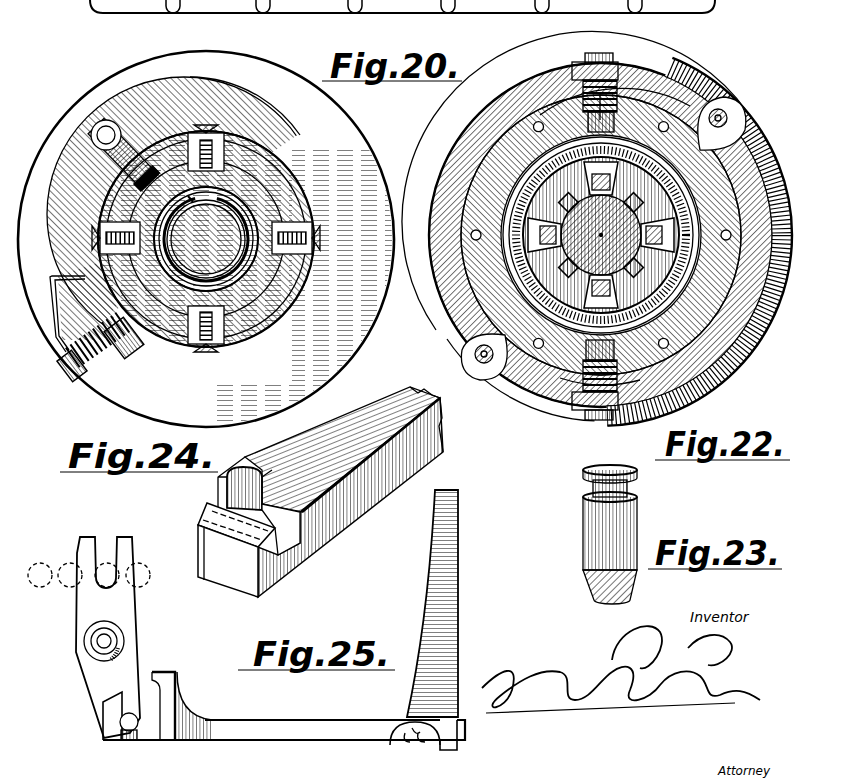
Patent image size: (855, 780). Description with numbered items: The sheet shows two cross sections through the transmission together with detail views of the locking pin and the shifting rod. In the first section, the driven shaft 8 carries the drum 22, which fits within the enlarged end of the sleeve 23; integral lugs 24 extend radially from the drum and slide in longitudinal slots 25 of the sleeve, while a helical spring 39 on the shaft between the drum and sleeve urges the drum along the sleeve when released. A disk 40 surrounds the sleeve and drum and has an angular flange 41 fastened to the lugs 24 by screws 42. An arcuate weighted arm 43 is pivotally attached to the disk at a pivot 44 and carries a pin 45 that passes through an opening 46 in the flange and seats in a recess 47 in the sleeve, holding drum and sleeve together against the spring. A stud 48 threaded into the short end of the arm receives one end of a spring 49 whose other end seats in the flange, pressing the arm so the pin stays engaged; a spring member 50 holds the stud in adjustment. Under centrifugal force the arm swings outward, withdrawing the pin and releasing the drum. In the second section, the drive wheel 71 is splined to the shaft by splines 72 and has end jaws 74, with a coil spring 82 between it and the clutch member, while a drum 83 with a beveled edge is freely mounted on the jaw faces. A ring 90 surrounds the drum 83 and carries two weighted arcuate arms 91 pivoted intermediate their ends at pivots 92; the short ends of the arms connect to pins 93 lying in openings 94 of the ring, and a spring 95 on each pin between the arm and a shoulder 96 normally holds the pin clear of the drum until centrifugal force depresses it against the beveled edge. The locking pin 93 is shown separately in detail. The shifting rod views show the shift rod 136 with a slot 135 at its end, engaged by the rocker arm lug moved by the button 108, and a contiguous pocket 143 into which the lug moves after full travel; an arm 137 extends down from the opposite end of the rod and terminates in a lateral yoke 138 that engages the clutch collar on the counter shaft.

In FIG. 20, the driven shaft 8 is at (188, 268).
In FIG. 22, the driven shaft 8 is at (598, 300).
In FIG. 20, the drum 22 is at (285, 178).
In FIG. 20, the sleeve 23 is at (303, 182).
In FIG. 20, the lugs 24 is at (268, 240).
In FIG. 20, the longitudinal slots 25 is at (262, 192).
In FIG. 20, the helical spring 39 is at (268, 266).
In FIG. 20, the disk 40 is at (368, 176).
In FIG. 20, the angular flange 41 is at (302, 214).
In FIG. 20, the screws 42 is at (308, 240).
In FIG. 20, the arcuate weighted arm 43 is at (170, 88).
In FIG. 20, the pivot 44 is at (75, 225).
In FIG. 20, the pin 45 is at (104, 128).
In FIG. 20, the opening 46 is at (140, 150).
In FIG. 20, the recess 47 is at (228, 105).
In FIG. 20, the stud 48 is at (66, 374).
In FIG. 20, the spring 49 is at (92, 366).
In FIG. 20, the spring member 50 is at (58, 318).
In FIG. 22, the drive wheel 71 is at (530, 198).
In FIG. 22, the splines 72 is at (745, 178).
In FIG. 22, the jaws 74 is at (500, 282).
In FIG. 22, the coil spring 82 is at (745, 342).
In FIG. 22, the drum 83 is at (500, 180).
In FIG. 22, the ring 90 is at (530, 165).
In FIG. 22, the weighted arcuate arms 91 is at (736, 140).
In FIG. 22, the pivot 92 is at (722, 112).
In FIG. 22, the pins 93 is at (612, 66).
In FIG. 23, the pins 93 is at (630, 490).
In FIG. 22, the openings 94 is at (660, 128).
In FIG. 22, the spring 95 is at (600, 108).
In FIG. 22, the shoulder 96 is at (622, 100).
In FIG. 23, the shoulder 96 is at (605, 568).
In FIG. 25, the button 108 is at (98, 652).
In FIG. 24, the slot 135 is at (300, 543).
In FIG. 25, the slot 135 is at (134, 742).
In FIG. 24, the shift rod 136 is at (374, 422).
In FIG. 25, the arm 137 is at (407, 714).
In FIG. 25, the yoke 138 is at (458, 598).
In FIG. 24, the pocket 143 is at (256, 470).
In FIG. 25, the pocket 143 is at (140, 712).